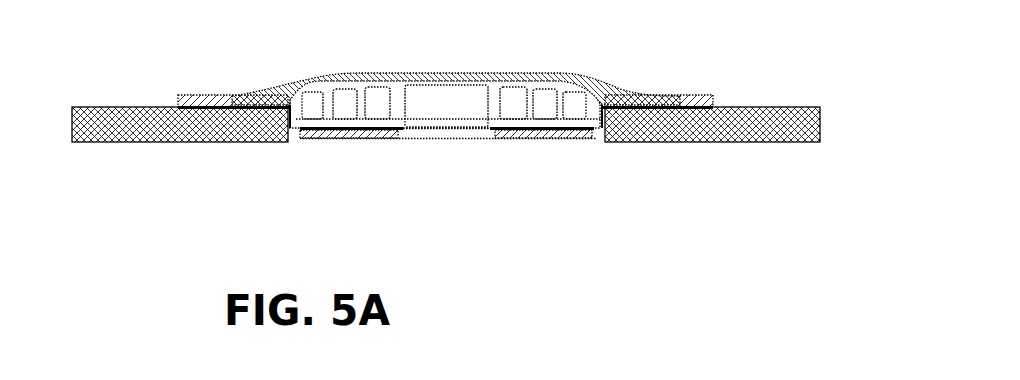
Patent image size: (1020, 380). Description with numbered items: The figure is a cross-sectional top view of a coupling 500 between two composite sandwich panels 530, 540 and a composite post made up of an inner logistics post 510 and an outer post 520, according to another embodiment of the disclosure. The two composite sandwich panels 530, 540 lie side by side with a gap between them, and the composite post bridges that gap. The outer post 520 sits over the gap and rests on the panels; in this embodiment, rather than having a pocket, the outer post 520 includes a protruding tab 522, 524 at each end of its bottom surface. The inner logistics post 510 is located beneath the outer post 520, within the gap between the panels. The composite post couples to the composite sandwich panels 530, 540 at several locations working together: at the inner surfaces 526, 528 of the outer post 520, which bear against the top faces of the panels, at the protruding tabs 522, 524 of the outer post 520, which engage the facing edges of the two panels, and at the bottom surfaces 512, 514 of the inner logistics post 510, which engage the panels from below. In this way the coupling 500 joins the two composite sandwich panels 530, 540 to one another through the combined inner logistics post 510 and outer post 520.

The coupling 500 is at (400, 43).
The inner logistics post 510 is at (428, 139).
The bottom surface 512 is at (546, 140).
The bottom surface 514 is at (349, 140).
The outer post 520 is at (480, 73).
The protruding tab 522 is at (598, 136).
The protruding tab 524 is at (291, 136).
The inner surface 526 is at (210, 105).
The inner surface 528 is at (665, 105).
The composite sandwich panel 530 is at (108, 142).
The composite sandwich panel 540 is at (788, 142).